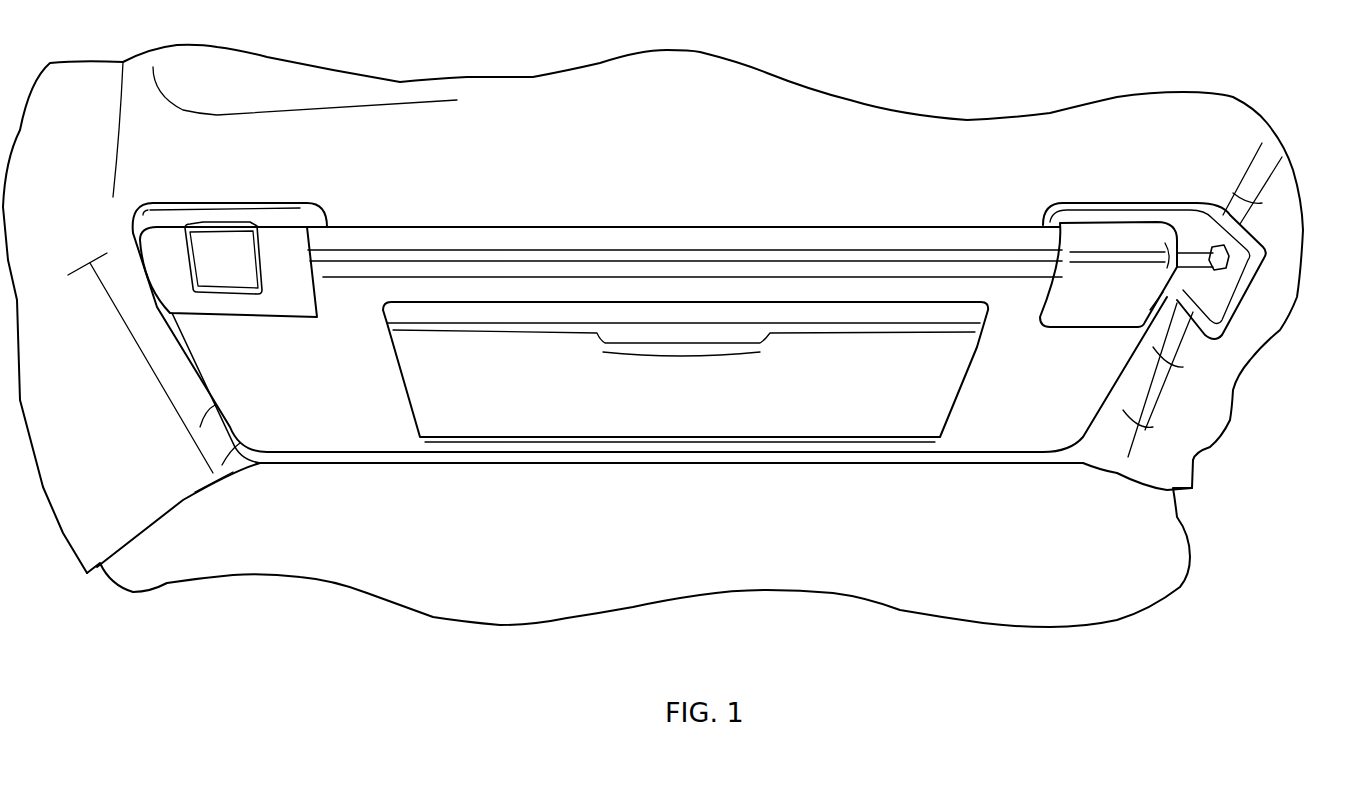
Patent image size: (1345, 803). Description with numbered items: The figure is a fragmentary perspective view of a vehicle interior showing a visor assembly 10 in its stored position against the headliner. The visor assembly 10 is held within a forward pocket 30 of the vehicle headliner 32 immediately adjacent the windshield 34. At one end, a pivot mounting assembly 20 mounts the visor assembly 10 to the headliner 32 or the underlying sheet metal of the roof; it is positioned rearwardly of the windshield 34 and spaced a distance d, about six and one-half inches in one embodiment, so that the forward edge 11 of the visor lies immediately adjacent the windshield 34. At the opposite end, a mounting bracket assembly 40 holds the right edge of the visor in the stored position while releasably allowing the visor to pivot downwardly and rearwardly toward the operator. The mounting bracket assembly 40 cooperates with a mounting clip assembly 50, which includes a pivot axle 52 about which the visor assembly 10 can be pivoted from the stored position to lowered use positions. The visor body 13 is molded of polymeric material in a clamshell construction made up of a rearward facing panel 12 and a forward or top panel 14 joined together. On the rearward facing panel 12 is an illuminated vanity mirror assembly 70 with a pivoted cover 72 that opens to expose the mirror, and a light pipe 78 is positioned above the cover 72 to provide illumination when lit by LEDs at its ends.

The visor assembly 10 is at (1026, 500).
The forward edge 11 is at (547, 455).
The rearward facing panel 12 is at (367, 430).
The visor body 13 is at (325, 432).
The top panel 14 is at (488, 227).
The pivot mounting assembly 20 is at (281, 232).
The forward pocket 30 is at (1140, 400).
The vehicle headliner 32 is at (689, 131).
The windshield 34 is at (685, 544).
The mounting bracket assembly 40 is at (1096, 228).
The mounting clip assembly 50 is at (1165, 192).
The pivot axle 52 is at (1203, 262).
The illuminated vanity mirror assembly 70 is at (410, 368).
The pivoted cover 72 is at (698, 392).
The light pipe 78 is at (573, 310).